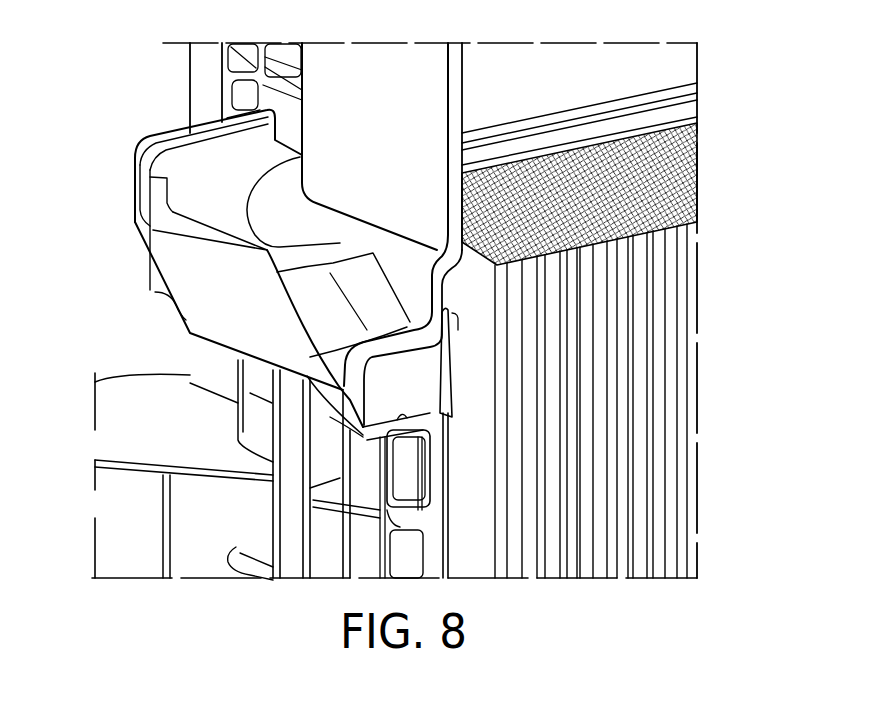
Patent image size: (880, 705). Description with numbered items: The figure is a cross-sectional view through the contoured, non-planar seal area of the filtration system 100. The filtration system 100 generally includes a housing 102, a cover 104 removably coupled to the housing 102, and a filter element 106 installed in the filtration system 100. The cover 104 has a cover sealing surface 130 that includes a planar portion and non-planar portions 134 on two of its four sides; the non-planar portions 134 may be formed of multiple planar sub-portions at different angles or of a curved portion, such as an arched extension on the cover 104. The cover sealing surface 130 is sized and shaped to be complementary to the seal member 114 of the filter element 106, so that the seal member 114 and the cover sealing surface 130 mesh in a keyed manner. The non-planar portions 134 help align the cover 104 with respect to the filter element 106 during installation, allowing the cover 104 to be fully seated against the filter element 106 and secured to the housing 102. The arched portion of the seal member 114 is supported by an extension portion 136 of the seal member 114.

The filtration system 100 is at (124, 70).
The housing 102 is at (207, 560).
The cover 104 is at (340, 82).
The filter element 106 is at (672, 293).
The seal member 114 is at (415, 378).
The cover sealing surface 130 is at (190, 180).
The non-planar portions 134 is at (300, 307).
The extension portion 136 is at (445, 295).